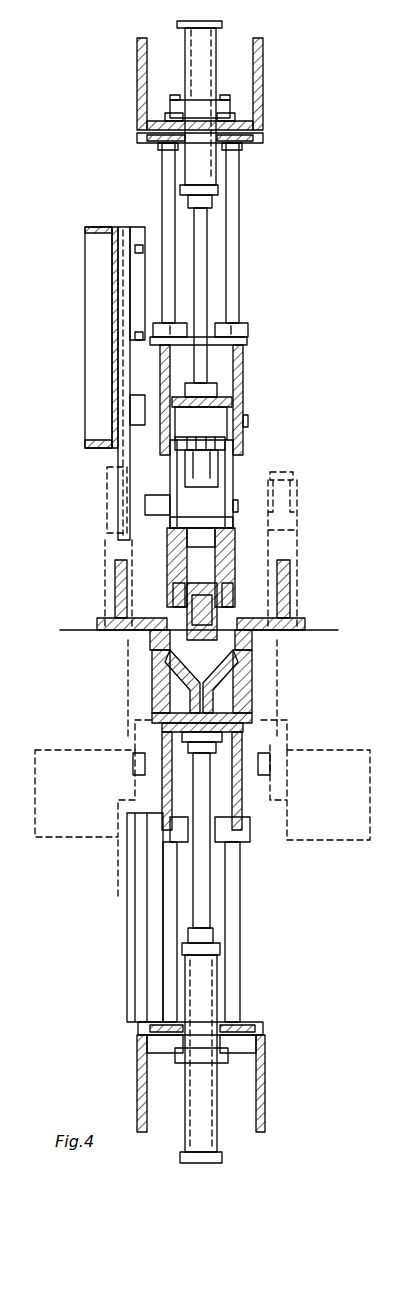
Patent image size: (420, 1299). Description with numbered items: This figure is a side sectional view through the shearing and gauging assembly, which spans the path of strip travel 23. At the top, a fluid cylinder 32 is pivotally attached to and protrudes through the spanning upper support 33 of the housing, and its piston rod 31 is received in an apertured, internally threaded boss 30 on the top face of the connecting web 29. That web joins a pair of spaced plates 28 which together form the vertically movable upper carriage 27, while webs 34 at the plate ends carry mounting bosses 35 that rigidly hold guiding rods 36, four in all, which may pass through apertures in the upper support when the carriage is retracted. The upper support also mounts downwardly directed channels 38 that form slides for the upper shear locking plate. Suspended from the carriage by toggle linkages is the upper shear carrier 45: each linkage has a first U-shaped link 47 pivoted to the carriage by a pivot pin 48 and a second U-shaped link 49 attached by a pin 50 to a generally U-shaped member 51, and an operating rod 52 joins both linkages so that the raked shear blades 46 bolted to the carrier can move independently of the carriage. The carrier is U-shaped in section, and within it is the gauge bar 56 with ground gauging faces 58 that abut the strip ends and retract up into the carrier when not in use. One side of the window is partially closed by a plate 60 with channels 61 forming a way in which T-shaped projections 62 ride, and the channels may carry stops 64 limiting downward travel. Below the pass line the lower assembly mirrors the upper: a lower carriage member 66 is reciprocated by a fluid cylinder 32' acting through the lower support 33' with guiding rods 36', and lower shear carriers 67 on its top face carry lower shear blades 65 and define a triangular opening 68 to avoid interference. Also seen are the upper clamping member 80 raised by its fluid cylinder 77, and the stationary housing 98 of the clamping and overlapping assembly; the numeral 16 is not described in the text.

The fluid cylinder 32 is at (220, 113).
The upper support 33 is at (218, 84).
The channels 38 is at (140, 138).
The guiding rods 36 is at (209, 233).
The piston rod 31 is at (200, 270).
The mounting bosses 35 is at (243, 326).
The boss 30 is at (246, 345).
The spaced plates 28 is at (238, 350).
The upper carriage 27 is at (258, 388).
The connecting web 29 is at (217, 390).
The first U-shaped link 47 is at (232, 402).
The pivot pin 48 is at (243, 425).
The second U-shaped link 49 is at (212, 497).
The pin 50 is at (233, 507).
The upper shear carrier 45 is at (225, 550).
The gauge bar 56 is at (201, 640).
The raked shear blades 46 is at (178, 583).
The insert 16 is at (228, 583).
The gauging faces 58 is at (187, 610).
The path of strip travel 23 is at (70, 628).
The upper clamping member 80 is at (115, 605).
The lower shear blades 65 is at (152, 638).
The lower shear carriers 67 is at (165, 668).
The triangular opening 68 is at (240, 668).
The lower carriage member 66 is at (242, 752).
The guiding rods 36' is at (230, 932).
The fluid cylinder 32' is at (237, 1049).
The lower support 33' is at (227, 1077).
The stationary housing 98 is at (75, 835).
The plate 60 is at (100, 228).
The channels 61 is at (118, 232).
The webs 34 is at (130, 360).
The T-shaped projections 62 is at (130, 428).
The operating rod 52 is at (120, 467).
The U-shaped member 51 is at (150, 515).
The stops 64 is at (118, 584).
The fluid cylinder 77 is at (290, 500).